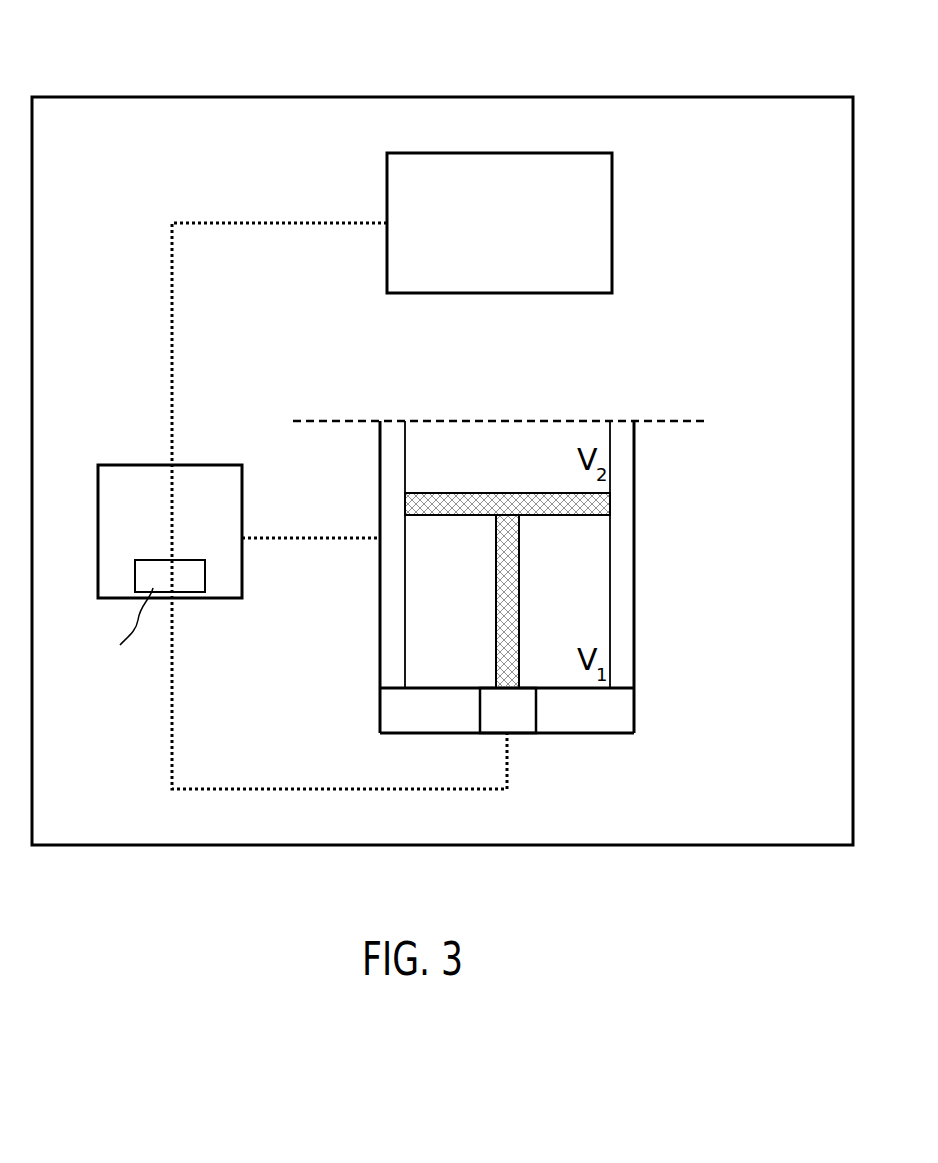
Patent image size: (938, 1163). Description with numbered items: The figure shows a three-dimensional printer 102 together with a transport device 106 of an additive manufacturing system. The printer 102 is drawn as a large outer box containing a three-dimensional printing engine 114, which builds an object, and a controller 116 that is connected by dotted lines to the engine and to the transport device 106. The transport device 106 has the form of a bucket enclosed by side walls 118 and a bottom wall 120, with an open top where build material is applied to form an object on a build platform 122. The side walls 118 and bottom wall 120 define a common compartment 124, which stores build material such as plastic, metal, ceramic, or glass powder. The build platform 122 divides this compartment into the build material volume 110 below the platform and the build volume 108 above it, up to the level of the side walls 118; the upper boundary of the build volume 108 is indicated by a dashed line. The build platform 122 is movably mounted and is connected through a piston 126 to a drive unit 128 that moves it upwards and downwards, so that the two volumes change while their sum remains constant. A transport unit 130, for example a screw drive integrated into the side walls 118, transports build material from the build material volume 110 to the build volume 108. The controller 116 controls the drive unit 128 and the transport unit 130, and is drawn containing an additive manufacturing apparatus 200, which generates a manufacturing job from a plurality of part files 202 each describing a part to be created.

The 3D printer 102 is at (439, 96).
The transport device 106 is at (641, 455).
The build volume 108 is at (530, 470).
The build material volume 110 is at (468, 617).
The 3D printing engine 114 is at (523, 255).
The controller 116 is at (193, 541).
The side walls 118 is at (380, 648).
The bottom wall 120 is at (605, 737).
The build platform 122 is at (595, 499).
The common compartment 124 is at (590, 631).
The piston 126 is at (520, 603).
The drive unit 128 is at (530, 725).
The transport unit 130 is at (400, 581).
The additive manufacturing apparatus 200 is at (170, 577).
The part files 202 is at (126, 634).